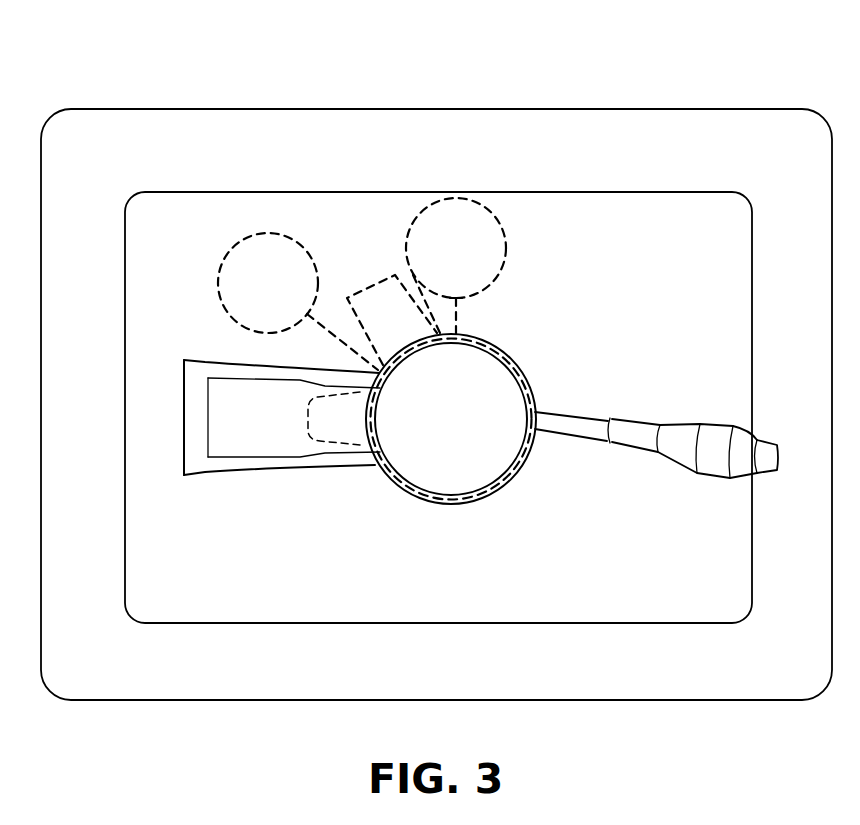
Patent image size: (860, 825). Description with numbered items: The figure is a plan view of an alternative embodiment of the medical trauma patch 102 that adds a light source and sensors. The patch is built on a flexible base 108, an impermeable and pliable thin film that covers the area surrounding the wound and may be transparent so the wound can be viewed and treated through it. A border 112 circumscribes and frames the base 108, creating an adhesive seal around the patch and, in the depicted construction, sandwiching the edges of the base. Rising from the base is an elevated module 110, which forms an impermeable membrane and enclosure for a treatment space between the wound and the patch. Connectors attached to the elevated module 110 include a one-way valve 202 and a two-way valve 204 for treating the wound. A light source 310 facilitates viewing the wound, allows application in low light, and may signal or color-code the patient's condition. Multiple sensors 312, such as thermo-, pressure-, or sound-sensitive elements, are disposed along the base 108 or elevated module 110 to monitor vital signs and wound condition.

The medical trauma patch 102 is at (120, 66).
The flexible base 108 is at (513, 595).
The elevated module 110 is at (483, 378).
The border 112 is at (680, 675).
The one-way valve 202 is at (228, 393).
The two-way valve 204 is at (702, 437).
The light source 310 is at (395, 275).
The sensors 312 is at (226, 252).